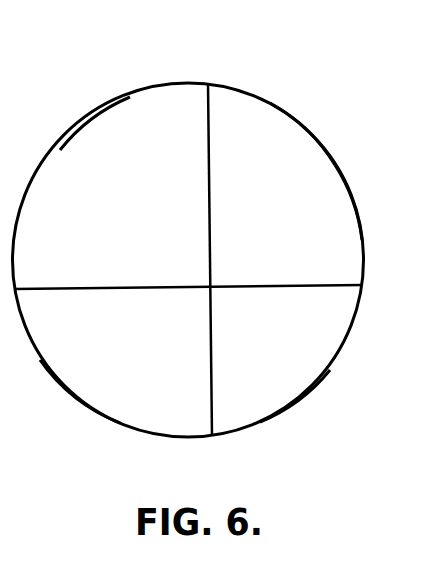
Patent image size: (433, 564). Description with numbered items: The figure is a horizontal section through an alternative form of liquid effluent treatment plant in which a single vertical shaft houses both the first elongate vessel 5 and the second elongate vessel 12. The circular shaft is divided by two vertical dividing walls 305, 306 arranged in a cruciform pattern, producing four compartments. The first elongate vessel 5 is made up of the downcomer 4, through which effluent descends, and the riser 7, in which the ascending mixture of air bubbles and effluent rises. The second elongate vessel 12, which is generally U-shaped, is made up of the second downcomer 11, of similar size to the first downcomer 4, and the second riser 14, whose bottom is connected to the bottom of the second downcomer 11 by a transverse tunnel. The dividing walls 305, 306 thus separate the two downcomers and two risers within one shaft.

The first downcomer 4 is at (108, 383).
The first elongate vessel 5 is at (128, 91).
The riser 7 is at (97, 145).
The second downcomer 11 is at (282, 377).
The second elongate vessel 12 is at (306, 125).
The second riser 14 is at (337, 205).
The vertical dividing wall 305 is at (208, 117).
The vertical dividing wall 306 is at (325, 287).